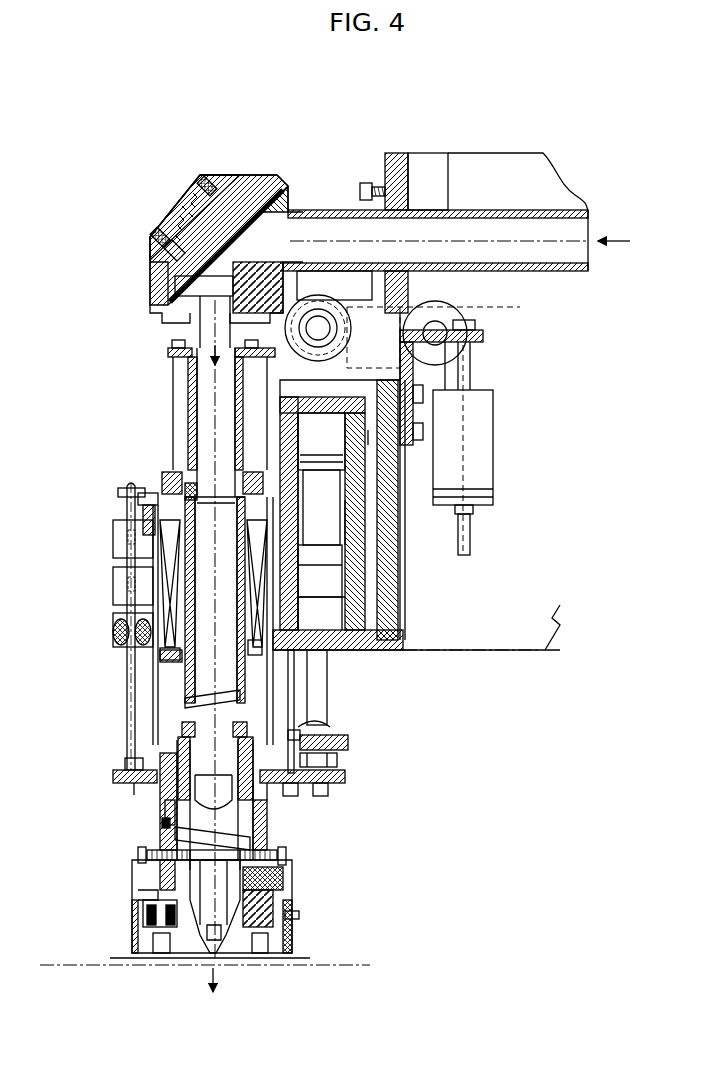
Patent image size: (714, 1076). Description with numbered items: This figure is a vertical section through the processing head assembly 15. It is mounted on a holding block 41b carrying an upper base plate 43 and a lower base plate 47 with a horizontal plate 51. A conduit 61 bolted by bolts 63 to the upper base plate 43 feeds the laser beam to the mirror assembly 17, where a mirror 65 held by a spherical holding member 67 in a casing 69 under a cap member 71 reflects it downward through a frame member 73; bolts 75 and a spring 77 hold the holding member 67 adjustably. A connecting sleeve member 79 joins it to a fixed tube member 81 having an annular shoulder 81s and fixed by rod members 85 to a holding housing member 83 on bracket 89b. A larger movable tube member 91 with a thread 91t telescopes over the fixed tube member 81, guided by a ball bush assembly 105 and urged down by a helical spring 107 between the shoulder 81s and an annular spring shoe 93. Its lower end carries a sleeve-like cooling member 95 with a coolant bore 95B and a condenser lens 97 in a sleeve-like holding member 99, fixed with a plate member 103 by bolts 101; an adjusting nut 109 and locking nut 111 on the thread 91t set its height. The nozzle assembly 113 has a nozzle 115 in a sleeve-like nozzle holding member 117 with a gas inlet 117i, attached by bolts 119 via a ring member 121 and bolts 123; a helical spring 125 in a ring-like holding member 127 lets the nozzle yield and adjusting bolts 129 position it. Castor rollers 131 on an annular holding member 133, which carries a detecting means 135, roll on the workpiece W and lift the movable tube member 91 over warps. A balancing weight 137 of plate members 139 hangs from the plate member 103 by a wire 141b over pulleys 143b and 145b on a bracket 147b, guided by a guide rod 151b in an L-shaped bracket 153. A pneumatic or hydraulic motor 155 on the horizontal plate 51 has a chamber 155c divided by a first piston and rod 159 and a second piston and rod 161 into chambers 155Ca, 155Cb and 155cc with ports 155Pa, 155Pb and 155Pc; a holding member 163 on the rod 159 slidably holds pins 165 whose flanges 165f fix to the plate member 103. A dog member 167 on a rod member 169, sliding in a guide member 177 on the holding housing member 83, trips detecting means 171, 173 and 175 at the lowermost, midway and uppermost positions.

The processing head assembly 15 is at (311, 130).
The mirror assembly 17 is at (263, 173).
The holding block 41b is at (445, 165).
The upper base plate 43 is at (396, 153).
The lower base plate 47 is at (395, 600).
The horizontal plate 51 is at (402, 642).
The conduit 61 is at (500, 211).
The bolts 63 is at (366, 185).
The mirror 65 is at (200, 200).
The holding member 67 is at (237, 178).
The casing 69 is at (150, 283).
The cap member 71 is at (166, 253).
The frame member 73 is at (287, 195).
The bolts 75 is at (208, 177).
The spring 77 is at (180, 210).
The connecting sleeve member 79 is at (162, 316).
The fixed tube member 81 is at (175, 353).
The annular shoulder 81s is at (180, 475).
The holding housing member 83 is at (160, 657).
The rod members 85 is at (178, 391).
The bracket 89b is at (372, 394).
The movable tube member 91 is at (185, 685).
The thread 91t is at (241, 518).
The annular spring shoe 93 is at (242, 701).
The sleeve-like cooling member 95 is at (248, 735).
The annular bore 95B is at (265, 792).
The condenser lens 97 is at (258, 832).
The sleeve-like holding member 99 is at (177, 799).
The bolts 101 is at (134, 758).
The plate member 103 is at (113, 777).
The ball bush assembly 105 is at (258, 655).
The helical spring 107 is at (195, 704).
The adjusting nut 109 is at (160, 496).
The locking nut 111 is at (178, 486).
The nozzle assembly 113 is at (310, 917).
The nozzle 115 is at (220, 948).
The sleeve-like nozzle holding member 117 is at (165, 844).
The inlet 117i is at (270, 847).
The bolts 119 is at (346, 781).
The ring member 121 is at (165, 811).
The bolts 123 is at (168, 824).
The helical spring 125 is at (155, 863).
The ring-like holding member 127 is at (258, 887).
The adjusting bolts 129 is at (140, 860).
The castor rollers 131 is at (162, 948).
The annular holding member 133 is at (292, 928).
The detecting means 135 is at (150, 927).
The balancing weight 137 is at (493, 430).
The plate members 139 is at (493, 494).
The wire 141b is at (295, 697).
The pulley 143b is at (320, 300).
The pulley 145b is at (460, 305).
The bracket 147b is at (470, 313).
The guide rod 151b is at (470, 529).
The L-shaped bracket 153 is at (483, 340).
The pneumatic or hydraulic motor 155 is at (362, 632).
The chamber 155c is at (345, 525).
The chamber 155cc is at (348, 462).
The chamber 155Ca is at (340, 622).
The chamber 155Cb is at (302, 592).
The port 155Pa is at (392, 622).
The port 155Pb is at (332, 572).
The port 155Pc is at (357, 438).
The first piston and rod 159 is at (322, 692).
The second piston and rod 161 is at (333, 529).
The holding member 163 is at (348, 747).
The pins 165 is at (340, 762).
The flange 165f is at (300, 737).
The dog member 167 is at (115, 647).
The rod member 169 is at (127, 705).
The detecting means 171 is at (115, 627).
The detecting means 173 is at (115, 582).
The detecting means 175 is at (115, 532).
The guide member 177 is at (118, 493).
The workpiece W is at (370, 958).